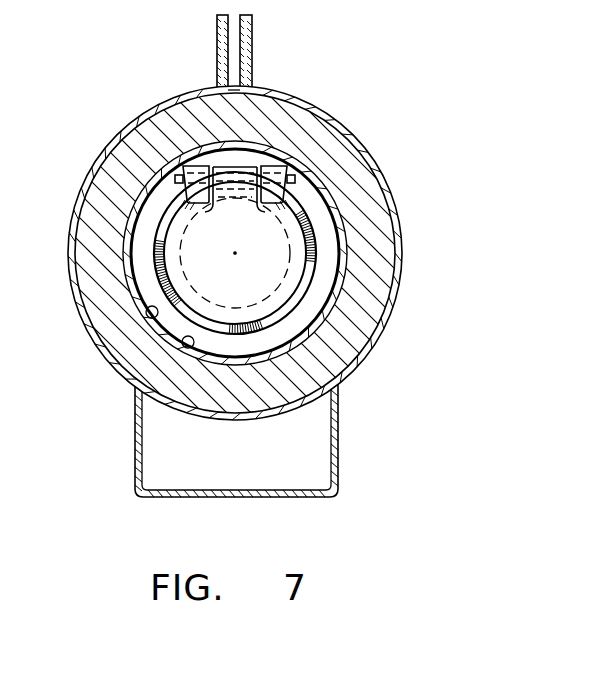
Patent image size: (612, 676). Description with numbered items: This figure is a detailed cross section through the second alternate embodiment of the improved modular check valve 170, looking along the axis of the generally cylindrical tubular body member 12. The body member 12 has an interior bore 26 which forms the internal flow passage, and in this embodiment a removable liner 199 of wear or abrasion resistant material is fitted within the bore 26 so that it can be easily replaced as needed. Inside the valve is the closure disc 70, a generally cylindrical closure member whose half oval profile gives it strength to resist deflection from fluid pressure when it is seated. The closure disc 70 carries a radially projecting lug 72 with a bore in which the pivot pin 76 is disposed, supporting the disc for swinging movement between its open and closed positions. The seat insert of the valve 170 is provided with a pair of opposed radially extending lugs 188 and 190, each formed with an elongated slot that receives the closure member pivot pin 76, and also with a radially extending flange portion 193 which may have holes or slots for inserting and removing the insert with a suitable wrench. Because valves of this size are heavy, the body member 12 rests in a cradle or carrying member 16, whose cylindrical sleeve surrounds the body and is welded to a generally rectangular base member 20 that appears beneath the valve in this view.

The tubular body member 12 is at (353, 165).
The cradle or carrying member 16 is at (128, 117).
The base member 20 is at (138, 473).
The interior bore 26 is at (188, 346).
The closure disc 70 is at (317, 263).
The radially projecting lug 72 is at (215, 163).
The pivot pin 76 is at (176, 180).
The check valve 170 is at (303, 83).
The radially extending lug 188 is at (127, 141).
The radially extending lug 190 is at (282, 150).
The radially extending flange portion 193 is at (317, 238).
The removable liner 199 is at (148, 314).